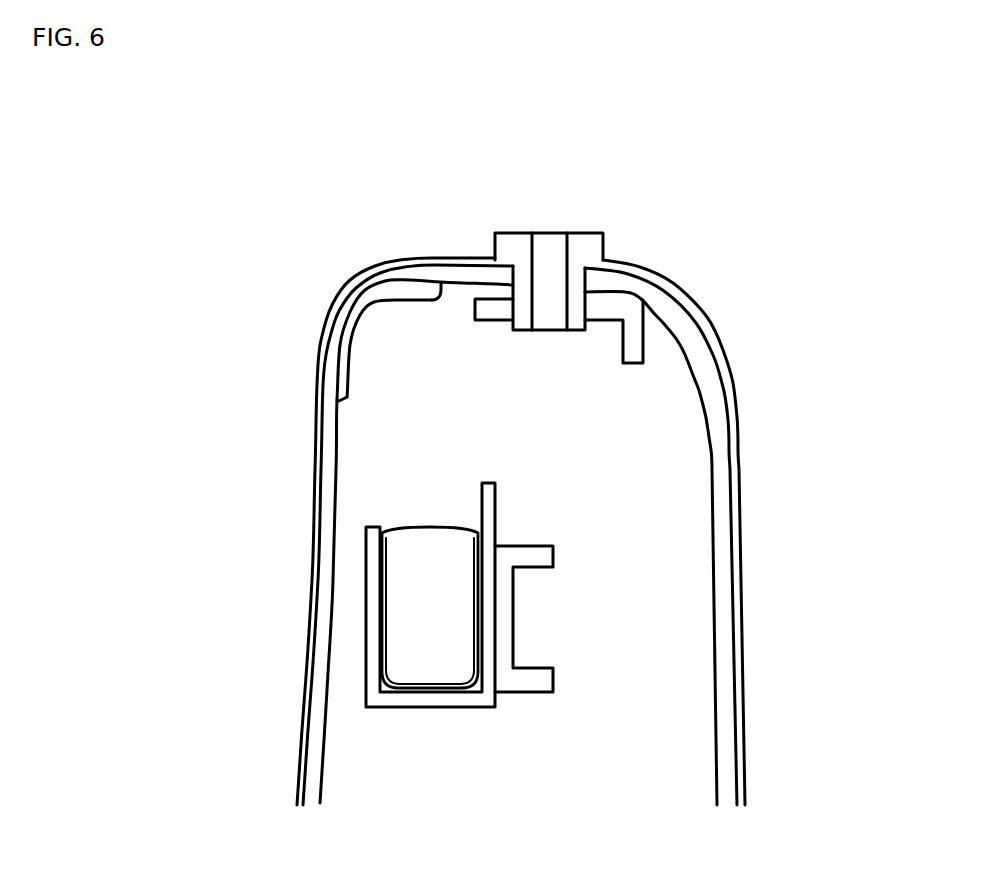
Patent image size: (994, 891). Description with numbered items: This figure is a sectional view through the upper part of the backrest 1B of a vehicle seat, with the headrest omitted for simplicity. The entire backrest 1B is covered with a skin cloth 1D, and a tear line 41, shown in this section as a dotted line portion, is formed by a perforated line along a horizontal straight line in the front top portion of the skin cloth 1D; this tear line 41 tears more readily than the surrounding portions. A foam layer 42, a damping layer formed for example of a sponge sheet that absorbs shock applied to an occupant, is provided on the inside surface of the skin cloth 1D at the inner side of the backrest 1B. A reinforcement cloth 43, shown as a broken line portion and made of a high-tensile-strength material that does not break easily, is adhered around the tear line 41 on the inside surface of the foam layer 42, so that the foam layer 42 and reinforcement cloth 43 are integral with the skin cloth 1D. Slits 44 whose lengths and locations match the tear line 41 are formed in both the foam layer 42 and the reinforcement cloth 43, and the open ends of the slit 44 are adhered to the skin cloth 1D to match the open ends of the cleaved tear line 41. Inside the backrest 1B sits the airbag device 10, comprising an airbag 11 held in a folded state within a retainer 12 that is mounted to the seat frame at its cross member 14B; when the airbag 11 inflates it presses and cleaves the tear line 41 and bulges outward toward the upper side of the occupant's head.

The backrest 1B is at (743, 533).
The skin cloth 1D is at (310, 583).
The airbag device 10 is at (466, 751).
The airbag 11 is at (400, 647).
The retainer 12 is at (486, 710).
The cross member 14B is at (523, 693).
The tear line 41 is at (371, 308).
The foam layer 42 is at (328, 750).
The reinforcement cloth 43 is at (423, 306).
The slit 44 is at (380, 306).